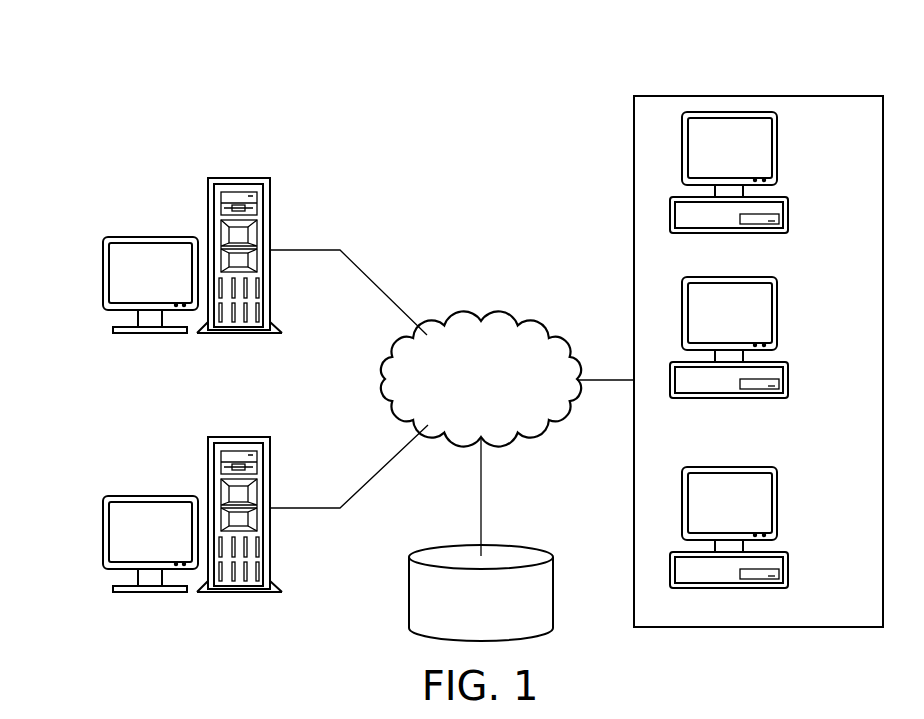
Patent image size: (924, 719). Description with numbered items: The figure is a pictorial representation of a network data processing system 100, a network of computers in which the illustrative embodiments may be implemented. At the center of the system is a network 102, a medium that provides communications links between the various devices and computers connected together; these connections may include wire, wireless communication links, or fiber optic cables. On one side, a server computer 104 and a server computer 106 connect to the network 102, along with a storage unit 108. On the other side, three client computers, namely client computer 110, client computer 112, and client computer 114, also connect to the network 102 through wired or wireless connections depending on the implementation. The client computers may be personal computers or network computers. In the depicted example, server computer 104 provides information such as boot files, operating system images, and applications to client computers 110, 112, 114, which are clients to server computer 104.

The network data processing system 100 is at (332, 56).
The network 102 is at (455, 327).
The server computer 104 is at (103, 535).
The server computer 106 is at (103, 275).
The storage unit 108 is at (409, 592).
The client computer 110 is at (788, 203).
The client computer 112 is at (788, 387).
The client computer 114 is at (788, 572).